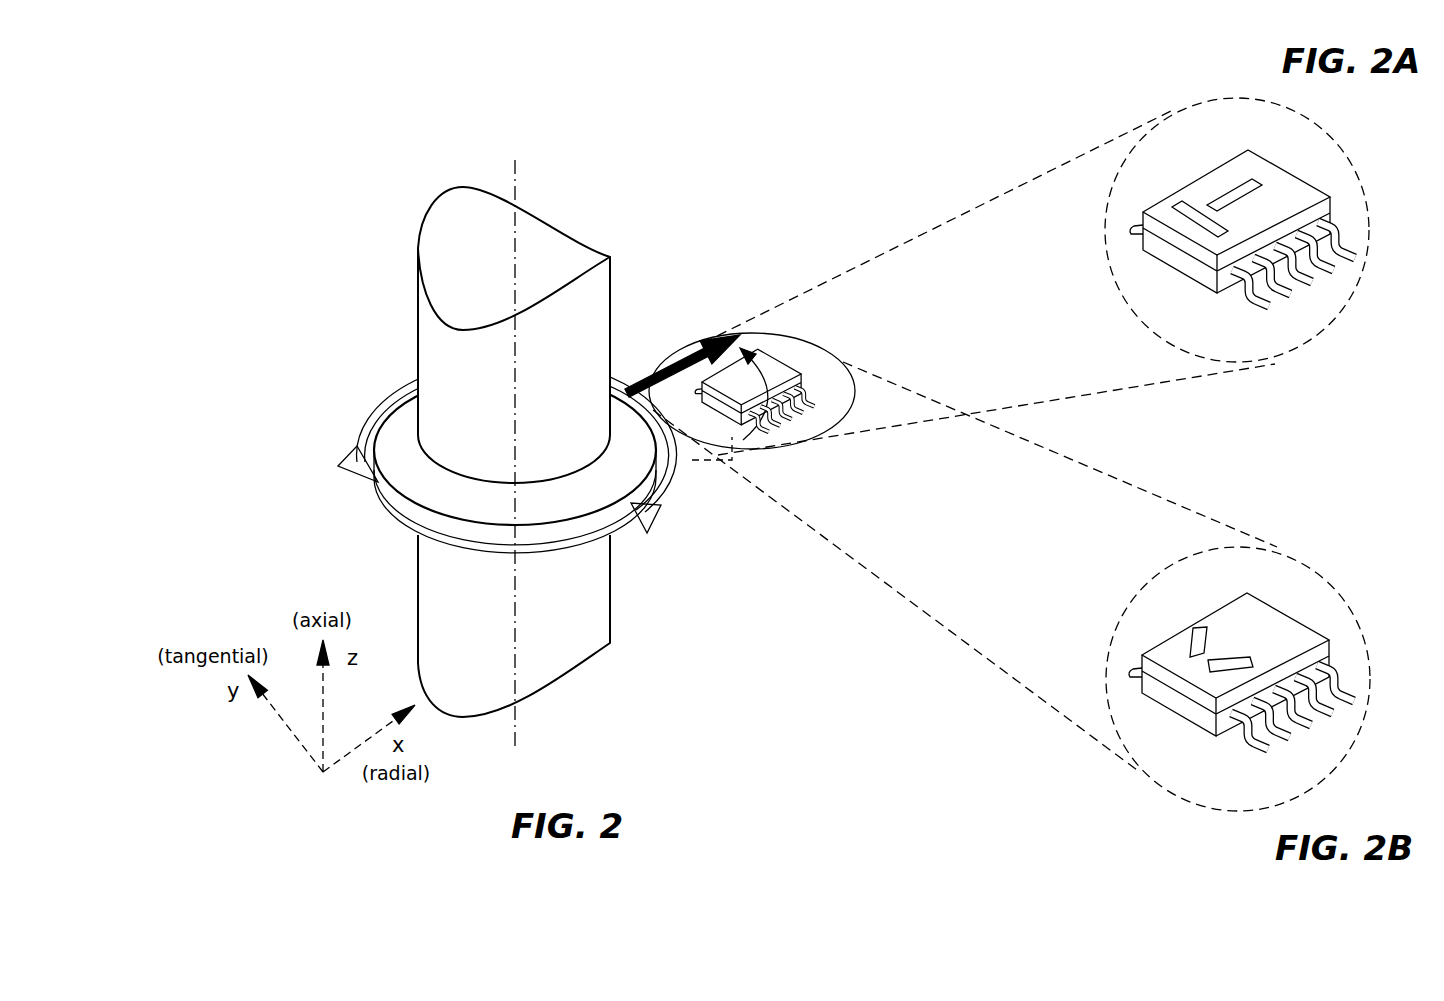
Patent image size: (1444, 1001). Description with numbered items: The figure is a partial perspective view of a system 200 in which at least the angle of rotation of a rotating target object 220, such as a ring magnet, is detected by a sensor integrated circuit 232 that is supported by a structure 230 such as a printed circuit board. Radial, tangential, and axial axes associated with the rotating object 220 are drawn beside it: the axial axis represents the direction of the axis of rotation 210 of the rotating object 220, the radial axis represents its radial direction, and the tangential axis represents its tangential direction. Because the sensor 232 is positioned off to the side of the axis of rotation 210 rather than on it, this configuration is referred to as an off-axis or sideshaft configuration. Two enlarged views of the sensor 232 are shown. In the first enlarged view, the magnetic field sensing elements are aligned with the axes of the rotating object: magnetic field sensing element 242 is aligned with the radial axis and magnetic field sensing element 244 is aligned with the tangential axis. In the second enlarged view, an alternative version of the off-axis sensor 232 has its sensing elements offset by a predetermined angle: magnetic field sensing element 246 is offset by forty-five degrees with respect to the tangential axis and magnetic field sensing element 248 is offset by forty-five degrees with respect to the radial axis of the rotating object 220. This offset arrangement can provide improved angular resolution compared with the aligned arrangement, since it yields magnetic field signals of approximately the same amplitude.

In FIG. 2, the system 200 is at (709, 70).
In FIG. 2, the axis of rotation 210 is at (517, 727).
In FIG. 2, the rotating target object 220 is at (623, 432).
In FIG. 2, the structure 230 is at (780, 335).
In FIG. 2, the sensor integrated circuit 232 is at (775, 372).
In FIG. 2A, the magnetic field sensing element 242 is at (1228, 203).
In FIG. 2A, the magnetic field sensing element 244 is at (1178, 212).
In FIG. 2B, the magnetic field sensing element 246 is at (1198, 647).
In FIG. 2B, the magnetic field sensing element 248 is at (1242, 658).